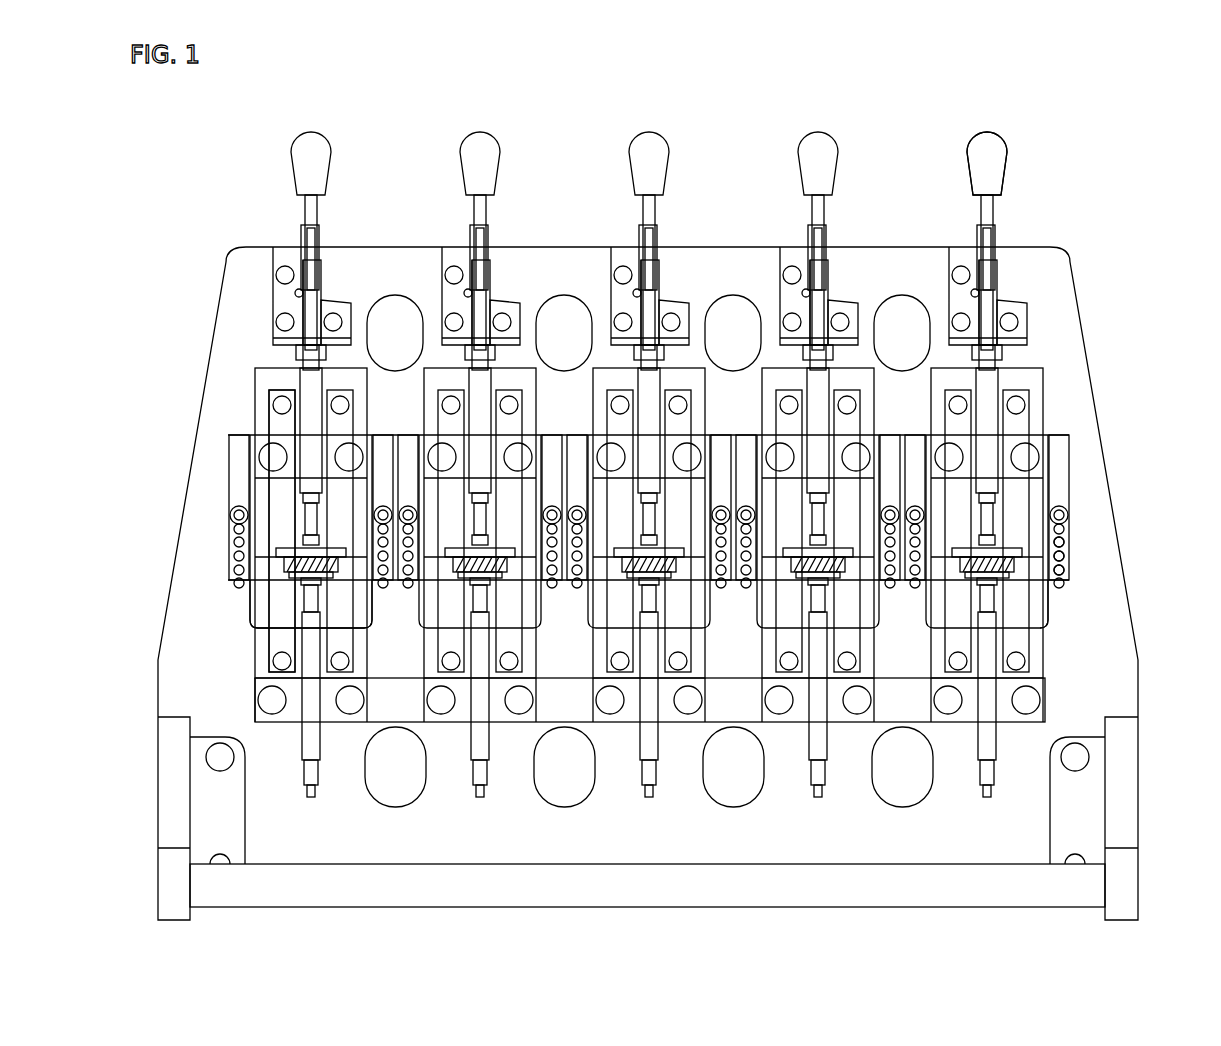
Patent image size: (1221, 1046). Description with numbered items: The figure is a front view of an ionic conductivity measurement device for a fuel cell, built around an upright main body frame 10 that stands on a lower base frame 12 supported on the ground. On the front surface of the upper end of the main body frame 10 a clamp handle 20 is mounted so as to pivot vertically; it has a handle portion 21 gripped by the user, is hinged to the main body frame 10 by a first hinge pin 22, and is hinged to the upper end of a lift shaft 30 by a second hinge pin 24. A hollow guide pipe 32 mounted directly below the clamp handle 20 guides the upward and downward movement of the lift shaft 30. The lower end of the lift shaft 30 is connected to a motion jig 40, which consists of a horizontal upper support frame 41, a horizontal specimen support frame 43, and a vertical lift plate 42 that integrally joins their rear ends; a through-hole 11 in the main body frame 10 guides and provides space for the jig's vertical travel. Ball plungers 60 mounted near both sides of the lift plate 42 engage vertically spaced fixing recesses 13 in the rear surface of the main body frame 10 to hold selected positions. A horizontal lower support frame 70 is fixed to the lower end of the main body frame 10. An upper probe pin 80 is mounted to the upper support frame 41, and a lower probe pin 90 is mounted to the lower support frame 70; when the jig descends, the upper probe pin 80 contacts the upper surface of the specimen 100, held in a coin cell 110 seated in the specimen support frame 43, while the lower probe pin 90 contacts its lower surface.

The main body frame 10 is at (1110, 585).
The through-hole 11 is at (1062, 608).
The lower base frame 12 is at (1015, 893).
The fixing recesses 13 is at (1066, 548).
The clamp handle 20 is at (1008, 151).
The handle portion 21 is at (975, 160).
The first hinge pin 22 is at (994, 233).
The second hinge pin 24 is at (998, 275).
The lift shaft 30 is at (987, 310).
The guide pipe 32 is at (1003, 357).
The motion jig 40 is at (280, 432).
The upper support frame 41 is at (262, 486).
The lift plate 42 is at (262, 520).
The specimen support frame 43 is at (278, 585).
The ball plungers 60 is at (1066, 504).
The lower support frame 70 is at (262, 682).
The upper probe pin 80 is at (300, 382).
The lower probe pin 90 is at (300, 762).
The specimen 100 is at (455, 570).
The coin cell 110 is at (441, 574).